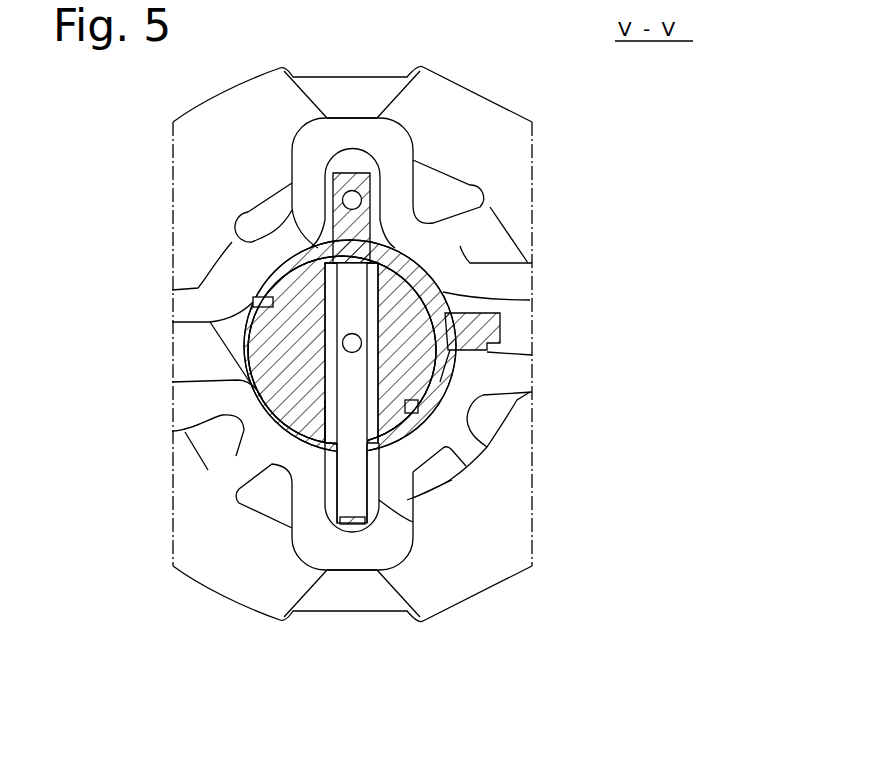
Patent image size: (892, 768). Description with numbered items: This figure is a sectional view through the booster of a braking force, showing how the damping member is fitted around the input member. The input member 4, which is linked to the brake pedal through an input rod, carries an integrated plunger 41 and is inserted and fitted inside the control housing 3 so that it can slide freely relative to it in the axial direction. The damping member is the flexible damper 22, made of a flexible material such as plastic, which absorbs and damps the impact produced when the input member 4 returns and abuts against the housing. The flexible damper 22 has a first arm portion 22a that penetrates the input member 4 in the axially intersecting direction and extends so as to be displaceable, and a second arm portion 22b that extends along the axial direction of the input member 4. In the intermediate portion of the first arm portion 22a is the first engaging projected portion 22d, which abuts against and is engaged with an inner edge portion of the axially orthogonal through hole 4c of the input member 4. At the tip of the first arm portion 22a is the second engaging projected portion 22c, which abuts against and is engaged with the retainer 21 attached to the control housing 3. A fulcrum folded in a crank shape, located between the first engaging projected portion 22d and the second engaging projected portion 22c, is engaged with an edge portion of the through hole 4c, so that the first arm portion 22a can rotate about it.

The control housing 3 is at (288, 160).
The input member 4 is at (258, 397).
The through hole 4c is at (322, 411).
The retainer 21 is at (420, 258).
The flexible damper 22 is at (376, 366).
The first arm portion 22a is at (360, 453).
The second arm portion 22b is at (350, 524).
The second engaging projected portion 22c is at (360, 200).
The first engaging projected portion 22d is at (360, 335).
The plunger 41 is at (262, 340).